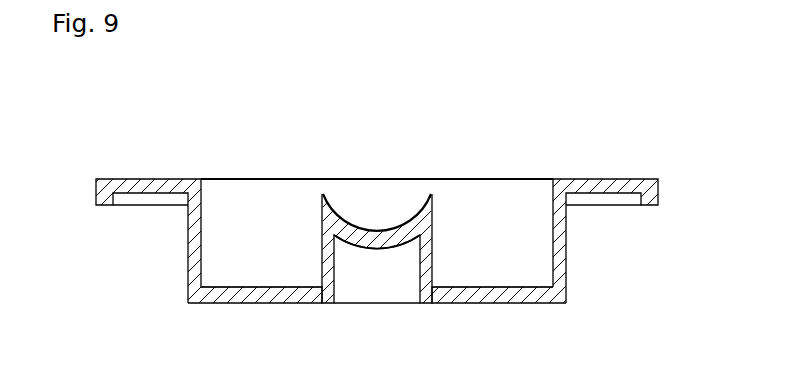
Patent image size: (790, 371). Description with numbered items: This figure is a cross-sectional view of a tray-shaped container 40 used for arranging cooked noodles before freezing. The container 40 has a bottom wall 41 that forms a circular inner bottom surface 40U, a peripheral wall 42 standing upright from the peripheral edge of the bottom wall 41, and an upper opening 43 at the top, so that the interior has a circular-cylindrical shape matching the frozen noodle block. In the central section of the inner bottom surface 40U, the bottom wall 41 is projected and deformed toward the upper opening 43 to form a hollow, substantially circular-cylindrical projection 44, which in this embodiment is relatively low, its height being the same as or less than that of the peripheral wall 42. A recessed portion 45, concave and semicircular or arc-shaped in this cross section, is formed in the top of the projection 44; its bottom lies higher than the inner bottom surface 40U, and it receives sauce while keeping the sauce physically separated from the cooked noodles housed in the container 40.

The container 40 is at (395, 202).
The inner bottom surface 40U is at (260, 287).
The bottom wall 41 is at (290, 303).
The peripheral wall 42 is at (187, 242).
The upper opening 43 is at (218, 178).
The projection 44 is at (378, 249).
The recessed portion 45 is at (377, 231).